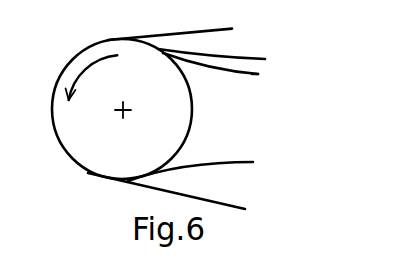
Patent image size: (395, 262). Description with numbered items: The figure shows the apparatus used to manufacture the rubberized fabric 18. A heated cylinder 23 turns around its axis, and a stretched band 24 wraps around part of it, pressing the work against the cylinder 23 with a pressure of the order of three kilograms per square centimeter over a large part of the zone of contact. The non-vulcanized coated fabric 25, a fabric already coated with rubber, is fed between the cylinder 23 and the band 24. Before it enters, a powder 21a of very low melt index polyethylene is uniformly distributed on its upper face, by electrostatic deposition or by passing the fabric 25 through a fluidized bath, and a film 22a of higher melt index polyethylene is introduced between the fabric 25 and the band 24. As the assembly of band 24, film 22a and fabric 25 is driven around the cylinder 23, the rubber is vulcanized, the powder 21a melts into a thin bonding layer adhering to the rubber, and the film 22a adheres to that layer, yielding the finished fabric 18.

The rubberized fabric 18 is at (234, 162).
The powder 21a is at (256, 73).
The film 22a is at (236, 60).
The cylinder 23 is at (70, 143).
The stretched band 24 is at (164, 34).
The non-vulcanized coated fabric 25 is at (254, 77).